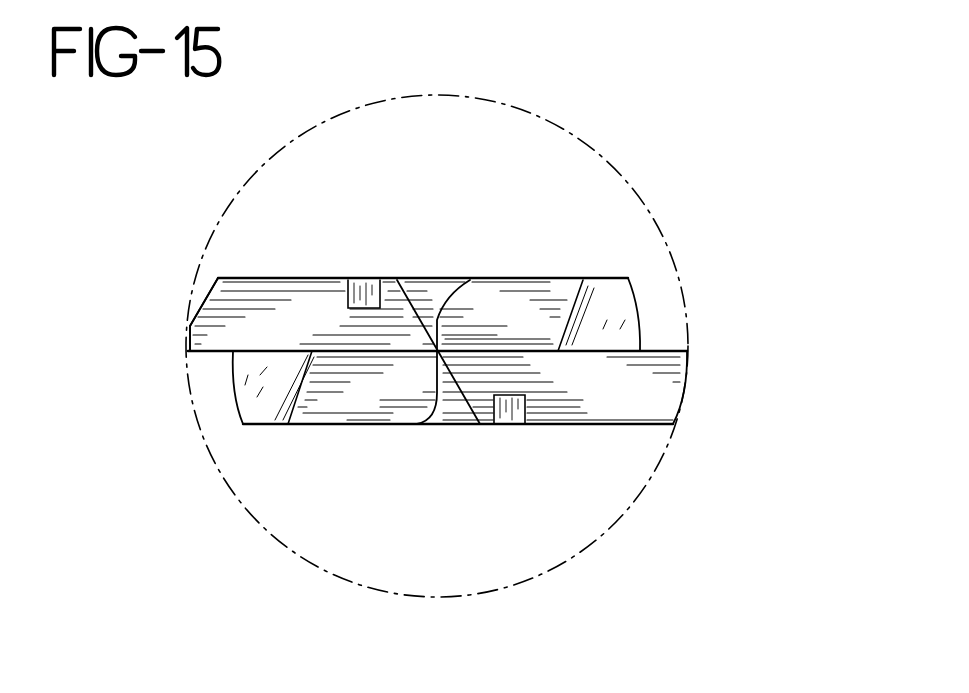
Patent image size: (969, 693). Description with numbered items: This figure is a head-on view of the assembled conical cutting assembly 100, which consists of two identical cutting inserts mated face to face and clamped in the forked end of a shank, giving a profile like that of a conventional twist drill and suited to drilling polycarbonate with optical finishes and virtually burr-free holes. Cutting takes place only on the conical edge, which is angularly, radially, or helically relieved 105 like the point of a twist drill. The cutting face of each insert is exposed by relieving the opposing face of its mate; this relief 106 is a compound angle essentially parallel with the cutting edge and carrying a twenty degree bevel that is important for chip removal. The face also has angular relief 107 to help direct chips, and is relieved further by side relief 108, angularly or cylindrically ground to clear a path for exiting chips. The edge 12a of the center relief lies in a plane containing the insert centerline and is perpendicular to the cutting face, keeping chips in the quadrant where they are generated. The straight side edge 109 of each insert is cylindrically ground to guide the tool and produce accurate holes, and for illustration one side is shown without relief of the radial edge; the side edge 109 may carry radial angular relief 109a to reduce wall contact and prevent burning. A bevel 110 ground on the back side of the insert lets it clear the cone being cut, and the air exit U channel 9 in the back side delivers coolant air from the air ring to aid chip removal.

The conical cutting assembly 100 is at (698, 268).
The air exit U channel 9 is at (369, 279).
The relief of conical edge 105 is at (583, 417).
The bevel 110 is at (420, 279).
The center relief edge 12a is at (473, 279).
The relief 106 is at (559, 279).
The angular relief 107 is at (263, 407).
The side relief 108 is at (633, 291).
The straight side edge 109 is at (673, 419).
The radial angular relief 109a is at (203, 302).